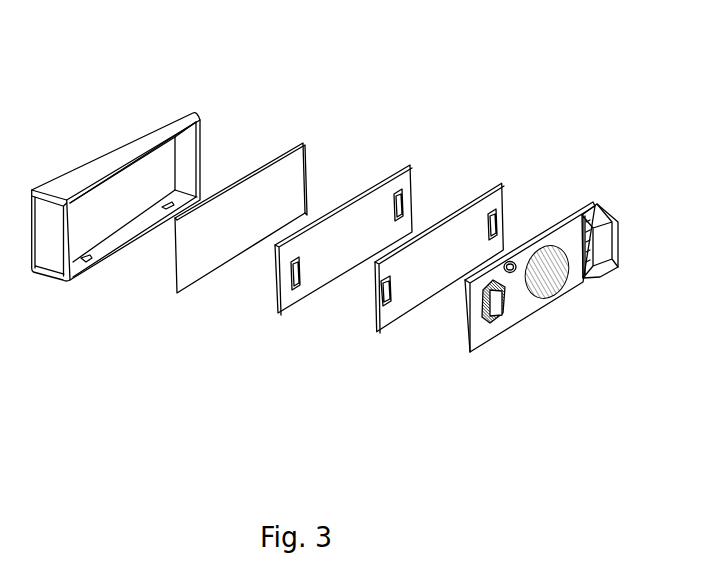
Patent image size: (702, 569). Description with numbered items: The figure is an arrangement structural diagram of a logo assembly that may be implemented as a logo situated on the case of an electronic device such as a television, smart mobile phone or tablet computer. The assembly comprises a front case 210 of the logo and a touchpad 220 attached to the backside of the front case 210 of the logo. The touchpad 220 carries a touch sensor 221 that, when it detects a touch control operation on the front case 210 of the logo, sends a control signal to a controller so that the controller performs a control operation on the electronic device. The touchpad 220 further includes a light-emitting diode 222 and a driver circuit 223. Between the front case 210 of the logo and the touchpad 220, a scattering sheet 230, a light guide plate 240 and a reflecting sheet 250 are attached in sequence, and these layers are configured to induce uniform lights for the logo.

The front case of the logo 210 is at (220, 37).
The touchpad 220 is at (620, 123).
The touch sensor 221 is at (590, 345).
The light-emitting diode 222 is at (545, 372).
The driver circuit 223 is at (462, 372).
The scattering sheet 230 is at (342, 63).
The light guide plate 240 is at (453, 87).
The reflecting sheet 250 is at (535, 104).